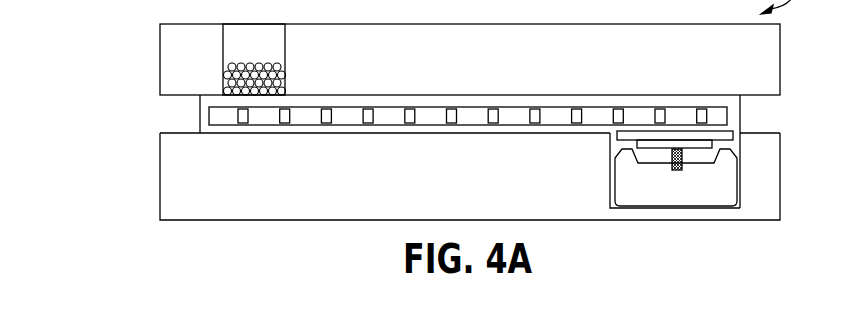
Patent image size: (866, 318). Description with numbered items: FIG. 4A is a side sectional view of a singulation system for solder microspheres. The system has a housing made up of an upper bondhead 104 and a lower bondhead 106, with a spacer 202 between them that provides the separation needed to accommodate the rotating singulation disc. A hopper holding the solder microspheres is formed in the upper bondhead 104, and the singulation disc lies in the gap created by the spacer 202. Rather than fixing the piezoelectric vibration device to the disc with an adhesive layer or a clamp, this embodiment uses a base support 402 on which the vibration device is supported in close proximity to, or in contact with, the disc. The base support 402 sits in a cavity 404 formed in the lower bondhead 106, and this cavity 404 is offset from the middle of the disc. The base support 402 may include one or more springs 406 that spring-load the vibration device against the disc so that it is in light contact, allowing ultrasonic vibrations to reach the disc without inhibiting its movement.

The upper bondhead 104 is at (765, 59).
The spacer 202 is at (765, 117).
The lower bondhead 106 is at (762, 202).
The base support 402 is at (653, 188).
The cavity 404 is at (610, 183).
The spring 406 is at (683, 165).